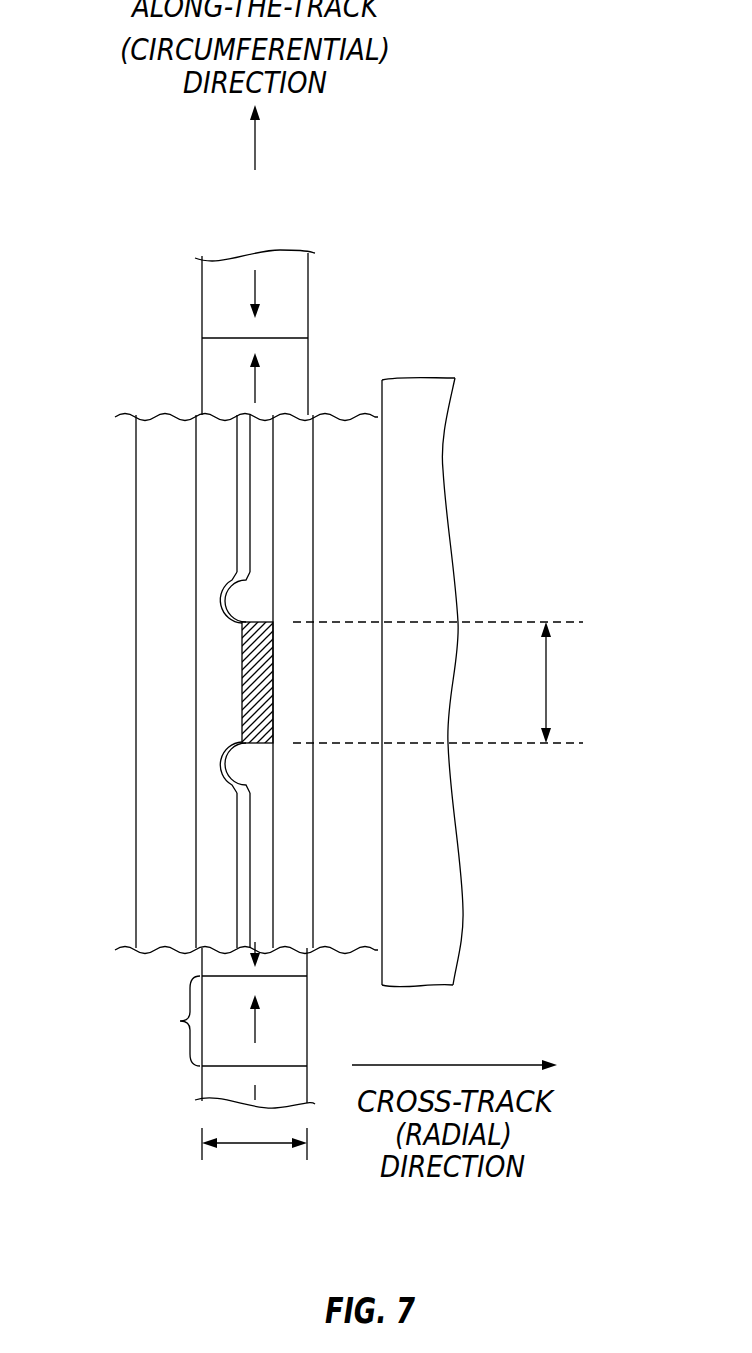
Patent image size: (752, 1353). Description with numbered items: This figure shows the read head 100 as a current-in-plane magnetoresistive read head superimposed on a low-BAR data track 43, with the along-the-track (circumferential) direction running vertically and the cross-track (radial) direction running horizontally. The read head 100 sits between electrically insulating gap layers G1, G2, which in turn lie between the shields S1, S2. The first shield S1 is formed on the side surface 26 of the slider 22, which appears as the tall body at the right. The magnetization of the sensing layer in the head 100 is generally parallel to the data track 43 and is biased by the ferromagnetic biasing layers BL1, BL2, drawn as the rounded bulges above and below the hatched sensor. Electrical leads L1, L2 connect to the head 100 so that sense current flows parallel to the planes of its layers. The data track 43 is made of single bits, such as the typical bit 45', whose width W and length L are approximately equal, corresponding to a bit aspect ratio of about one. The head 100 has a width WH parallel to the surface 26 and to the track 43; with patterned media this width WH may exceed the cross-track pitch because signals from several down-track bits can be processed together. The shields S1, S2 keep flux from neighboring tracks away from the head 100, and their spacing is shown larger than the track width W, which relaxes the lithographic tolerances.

The low-BAR data track 43 is at (310, 240).
The slider 22 is at (428, 487).
The side surface 26 is at (380, 968).
The typical bit 45' is at (290, 1025).
The read head 100 is at (243, 678).
The first shield S1 is at (343, 432).
The second shield S2 is at (157, 925).
The first gap layer G1 is at (300, 493).
The second gap layer G2 is at (213, 485).
The first electrical lead L1 is at (242, 815).
The second electrical lead L2 is at (242, 543).
The first ferromagnetic biasing layer BL1 is at (258, 763).
The second ferromagnetic biasing layer BL2 is at (258, 593).
The read head width WH is at (446, 682).
The bit length dimension L is at (180, 1021).
The data track width W is at (254, 1157).